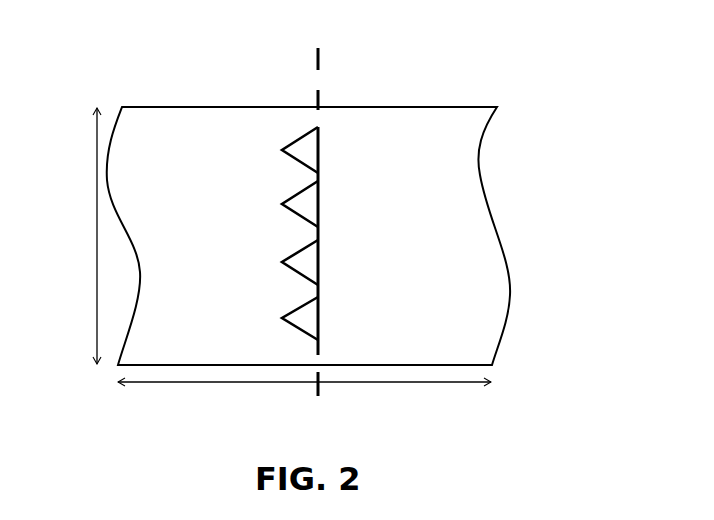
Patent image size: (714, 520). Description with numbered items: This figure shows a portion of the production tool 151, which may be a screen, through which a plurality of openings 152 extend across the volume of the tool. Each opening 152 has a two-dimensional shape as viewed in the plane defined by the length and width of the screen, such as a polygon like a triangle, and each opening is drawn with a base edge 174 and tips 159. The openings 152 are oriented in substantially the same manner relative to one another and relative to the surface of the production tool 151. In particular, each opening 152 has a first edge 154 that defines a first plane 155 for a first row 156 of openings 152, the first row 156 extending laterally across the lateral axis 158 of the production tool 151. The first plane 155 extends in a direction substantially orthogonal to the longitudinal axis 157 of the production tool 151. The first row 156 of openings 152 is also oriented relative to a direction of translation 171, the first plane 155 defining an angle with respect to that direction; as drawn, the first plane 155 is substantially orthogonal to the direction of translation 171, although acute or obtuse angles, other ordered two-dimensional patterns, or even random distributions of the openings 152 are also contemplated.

The production tool 151 is at (174, 120).
The opening 152 is at (283, 312).
The first edge 154 is at (323, 148).
The first plane 155 is at (323, 60).
The first row 156 is at (299, 118).
The longitudinal axis 157 is at (304, 410).
The lateral axis 158 is at (74, 236).
The tips 159 is at (281, 152).
The direction of translation 171 is at (566, 228).
The base edge 174 is at (323, 171).